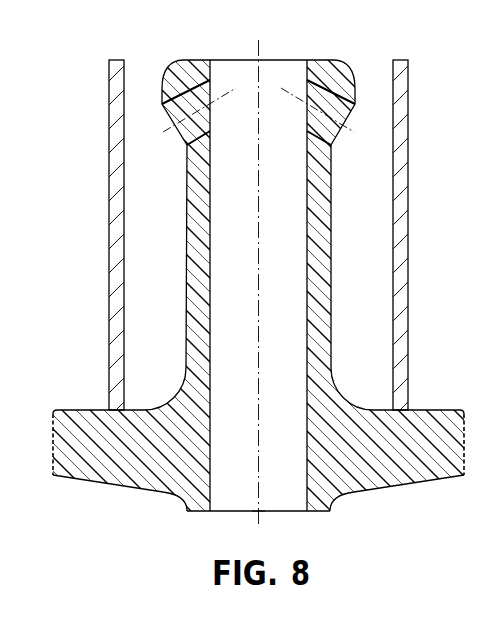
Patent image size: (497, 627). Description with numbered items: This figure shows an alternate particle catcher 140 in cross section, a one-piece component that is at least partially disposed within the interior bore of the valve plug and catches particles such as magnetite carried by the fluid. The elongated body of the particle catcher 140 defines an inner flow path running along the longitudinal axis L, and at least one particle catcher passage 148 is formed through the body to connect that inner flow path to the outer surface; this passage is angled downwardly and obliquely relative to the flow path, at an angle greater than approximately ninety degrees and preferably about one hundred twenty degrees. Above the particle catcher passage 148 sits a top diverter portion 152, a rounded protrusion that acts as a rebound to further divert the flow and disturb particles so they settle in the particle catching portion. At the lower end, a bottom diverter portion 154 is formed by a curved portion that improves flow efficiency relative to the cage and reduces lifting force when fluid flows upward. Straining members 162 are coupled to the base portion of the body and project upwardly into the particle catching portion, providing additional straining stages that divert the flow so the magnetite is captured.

The particle catcher 140 is at (198, 488).
The particle catcher passage 148 is at (162, 106).
The top diverter portion 152 is at (196, 68).
The bottom diverter portion 154 is at (129, 485).
The straining members 162 is at (115, 60).
The longitudinal axis L is at (266, 62).